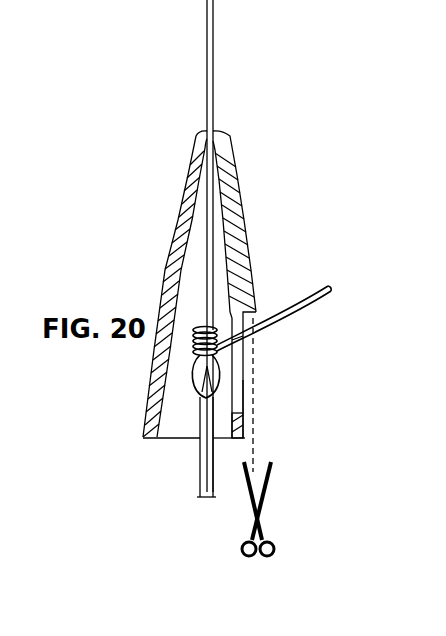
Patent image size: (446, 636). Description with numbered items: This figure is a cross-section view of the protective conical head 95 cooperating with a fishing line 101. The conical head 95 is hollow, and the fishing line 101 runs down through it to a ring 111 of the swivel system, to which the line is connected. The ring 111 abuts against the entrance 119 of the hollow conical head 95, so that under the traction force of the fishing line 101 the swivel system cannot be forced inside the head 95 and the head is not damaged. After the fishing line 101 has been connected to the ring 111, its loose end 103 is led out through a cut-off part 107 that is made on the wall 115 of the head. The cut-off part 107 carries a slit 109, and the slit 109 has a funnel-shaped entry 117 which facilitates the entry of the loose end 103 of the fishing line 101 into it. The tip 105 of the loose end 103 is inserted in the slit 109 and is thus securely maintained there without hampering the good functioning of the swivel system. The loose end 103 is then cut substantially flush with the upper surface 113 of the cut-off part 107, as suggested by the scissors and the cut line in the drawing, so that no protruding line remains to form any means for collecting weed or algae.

The fishing line 101 is at (214, 68).
The conical head 95 is at (236, 222).
The wall 115 is at (238, 257).
The cut-off part 107 is at (255, 313).
The loose end 103 is at (315, 310).
The tip 105 is at (232, 352).
The slit 109 is at (232, 358).
The upper surface 113 is at (243, 390).
The funnel-shaped entry 117 is at (242, 430).
The entrance 119 is at (167, 440).
The ring 111 is at (200, 487).